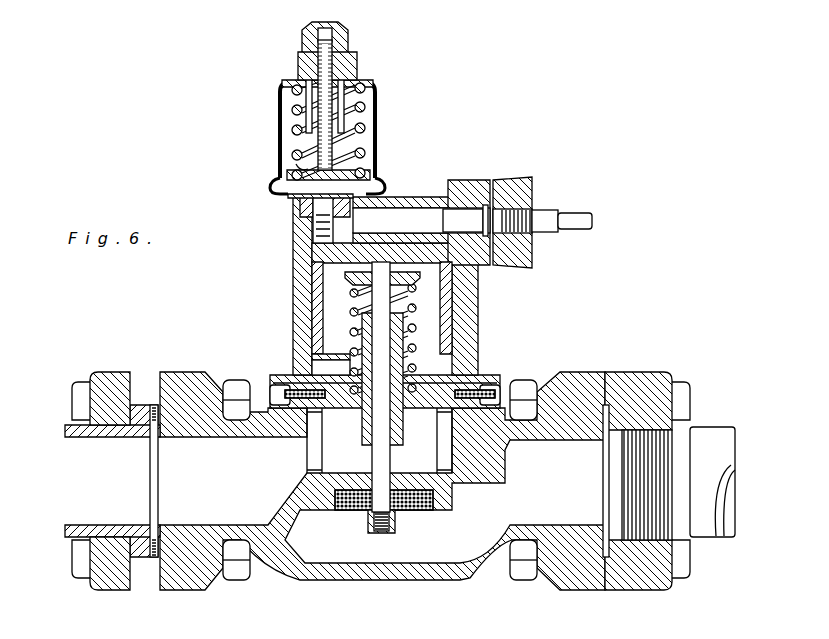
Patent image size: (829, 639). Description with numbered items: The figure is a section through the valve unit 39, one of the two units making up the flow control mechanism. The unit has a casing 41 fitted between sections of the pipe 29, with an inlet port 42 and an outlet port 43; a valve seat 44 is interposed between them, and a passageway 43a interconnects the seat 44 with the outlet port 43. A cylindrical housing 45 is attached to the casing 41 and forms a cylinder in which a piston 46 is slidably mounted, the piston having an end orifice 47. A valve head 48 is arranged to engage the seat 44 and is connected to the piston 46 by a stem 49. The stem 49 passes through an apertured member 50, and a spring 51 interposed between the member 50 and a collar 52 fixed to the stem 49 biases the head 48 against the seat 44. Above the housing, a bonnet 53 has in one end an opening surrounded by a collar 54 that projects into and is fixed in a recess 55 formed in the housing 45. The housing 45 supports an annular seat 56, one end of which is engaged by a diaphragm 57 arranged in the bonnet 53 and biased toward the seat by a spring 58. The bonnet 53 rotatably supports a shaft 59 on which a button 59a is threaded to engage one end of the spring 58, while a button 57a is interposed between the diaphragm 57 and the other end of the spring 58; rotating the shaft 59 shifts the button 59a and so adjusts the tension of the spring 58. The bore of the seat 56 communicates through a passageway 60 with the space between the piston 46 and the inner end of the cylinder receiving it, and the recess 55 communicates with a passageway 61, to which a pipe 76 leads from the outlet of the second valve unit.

The pipe 29 is at (63, 522).
The valve unit 39 is at (576, 374).
The casing 41 is at (320, 583).
The inlet port 42 is at (570, 505).
The outlet port 43 is at (153, 562).
The passageway 43a is at (315, 458).
The valve seat 44 is at (333, 495).
The cylindrical housing 45 is at (478, 322).
The piston 46 is at (450, 300).
The end orifice 47 is at (313, 250).
The valve head 48 is at (408, 515).
The stem 49 is at (382, 422).
The apertured member 50 is at (485, 378).
The spring 51 is at (348, 298).
The collar 52 is at (353, 285).
The bonnet 53 is at (280, 99).
The collar 54 is at (273, 193).
The recess 55 is at (288, 203).
The annular seat 56 is at (305, 215).
The diaphragm 57 is at (285, 175).
The button 57a is at (302, 172).
The spring 58 is at (362, 100).
The shaft 59 is at (343, 78).
The button 59a is at (308, 78).
The passageway 60 is at (323, 227).
The passageway 61 is at (407, 218).
The pipe 76 is at (573, 231).